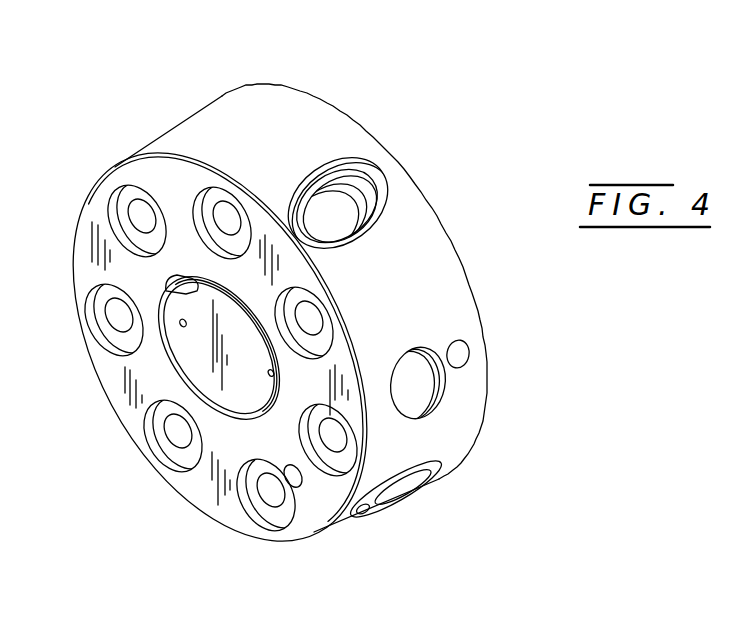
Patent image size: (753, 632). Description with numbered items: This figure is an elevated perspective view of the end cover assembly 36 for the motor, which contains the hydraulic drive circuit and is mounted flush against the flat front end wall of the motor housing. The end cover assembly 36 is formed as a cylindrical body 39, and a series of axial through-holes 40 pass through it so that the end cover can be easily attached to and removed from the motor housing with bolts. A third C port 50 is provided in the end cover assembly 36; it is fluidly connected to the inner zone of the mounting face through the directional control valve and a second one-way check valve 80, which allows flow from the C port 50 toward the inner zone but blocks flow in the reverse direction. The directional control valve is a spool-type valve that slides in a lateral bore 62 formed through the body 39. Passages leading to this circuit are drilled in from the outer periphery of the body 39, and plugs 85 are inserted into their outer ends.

The end cover assembly 36 is at (163, 72).
The cylindrical body 39 is at (457, 441).
The axial through-holes 40 is at (138, 212).
The C port 50 is at (357, 186).
The lateral bore 62 is at (430, 396).
The second one-way check valve 80 is at (398, 498).
The plugs 85 is at (462, 358).